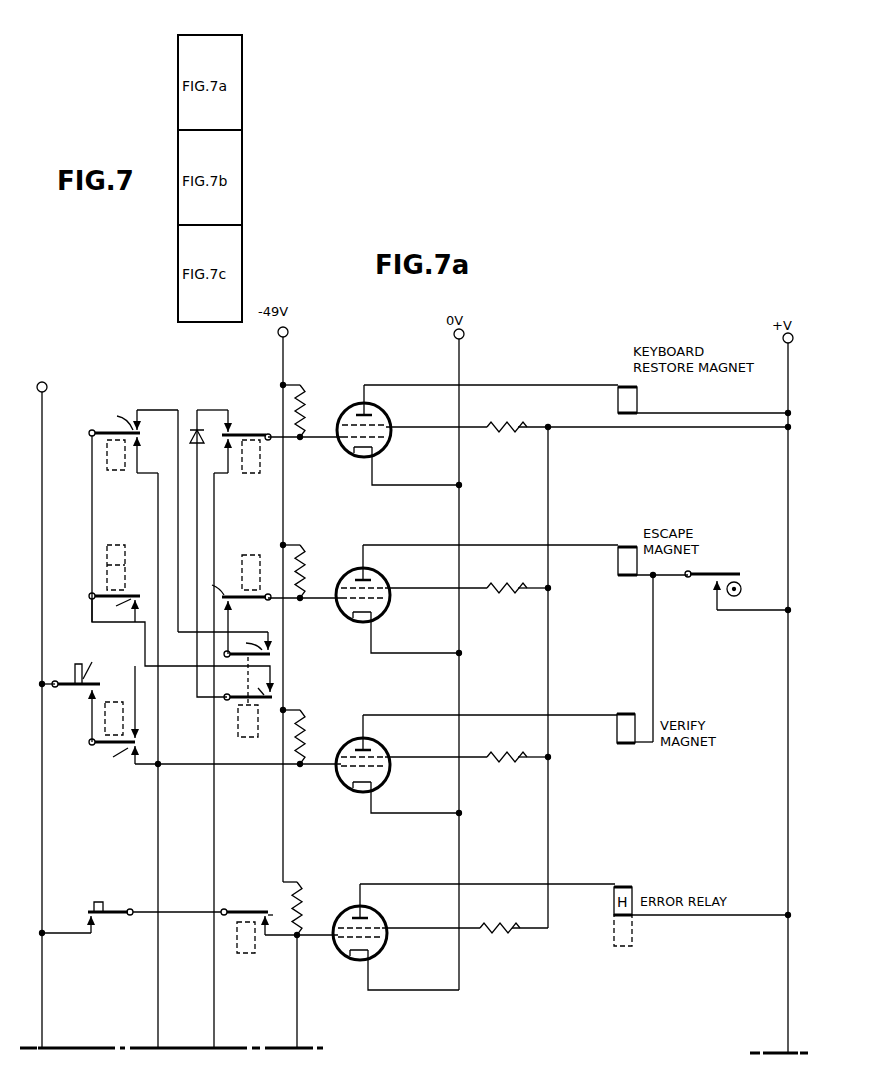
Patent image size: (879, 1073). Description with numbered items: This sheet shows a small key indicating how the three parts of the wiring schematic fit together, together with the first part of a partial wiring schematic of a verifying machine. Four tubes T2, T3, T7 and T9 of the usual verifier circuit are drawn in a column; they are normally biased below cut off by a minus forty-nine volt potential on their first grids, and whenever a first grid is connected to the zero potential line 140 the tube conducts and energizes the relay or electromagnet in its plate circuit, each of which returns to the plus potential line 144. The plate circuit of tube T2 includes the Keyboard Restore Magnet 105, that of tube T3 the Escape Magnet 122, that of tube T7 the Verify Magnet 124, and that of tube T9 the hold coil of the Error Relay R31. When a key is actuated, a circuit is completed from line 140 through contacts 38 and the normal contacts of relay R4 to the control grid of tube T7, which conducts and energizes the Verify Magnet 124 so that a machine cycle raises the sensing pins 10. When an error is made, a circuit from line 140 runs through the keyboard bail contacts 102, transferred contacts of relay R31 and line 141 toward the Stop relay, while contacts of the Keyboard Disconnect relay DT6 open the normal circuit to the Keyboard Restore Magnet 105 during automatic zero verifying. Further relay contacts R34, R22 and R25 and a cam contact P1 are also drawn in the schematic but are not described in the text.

The zero volt line 140 is at (42, 436).
The sensing pins 10 is at (231, 432).
The contacts 38 is at (100, 688).
The keyboard bail contacts 102 is at (93, 918).
The Keyboard Restore Magnet 105 is at (636, 400).
The Escape Magnet 122 is at (615, 558).
The Verify Magnet 124 is at (617, 714).
The line 141 is at (295, 1019).
The plus potential line 144 is at (783, 993).
The relay R34 contact R34 is at (126, 470).
The Error Relay R31 is at (125, 538).
The relay R4 is at (105, 715).
The Keyboard Disconnect relay DT6 is at (263, 472).
The relay R22 contact R22 is at (258, 555).
The relay R25 contact R25 is at (255, 737).
The tube T2 is at (383, 420).
The tube T3 is at (380, 585).
The tube T7 is at (378, 753).
The tube T9 is at (376, 925).
The cam contact P1 is at (740, 580).